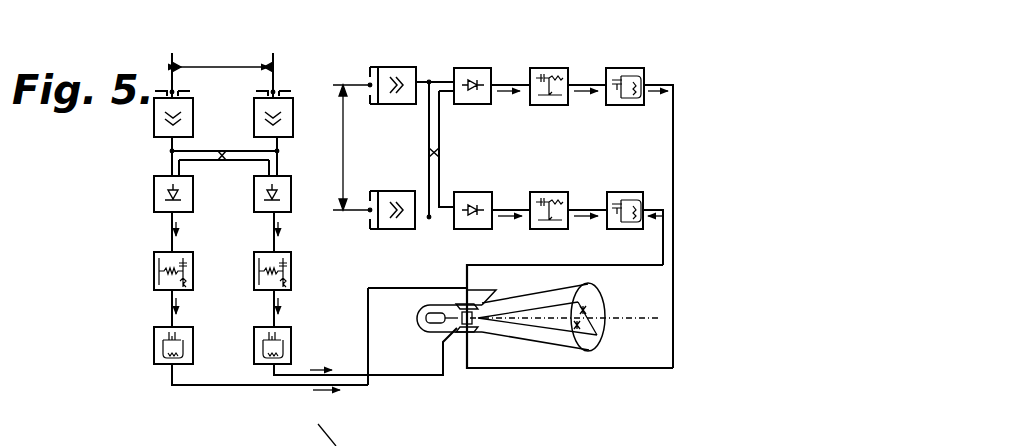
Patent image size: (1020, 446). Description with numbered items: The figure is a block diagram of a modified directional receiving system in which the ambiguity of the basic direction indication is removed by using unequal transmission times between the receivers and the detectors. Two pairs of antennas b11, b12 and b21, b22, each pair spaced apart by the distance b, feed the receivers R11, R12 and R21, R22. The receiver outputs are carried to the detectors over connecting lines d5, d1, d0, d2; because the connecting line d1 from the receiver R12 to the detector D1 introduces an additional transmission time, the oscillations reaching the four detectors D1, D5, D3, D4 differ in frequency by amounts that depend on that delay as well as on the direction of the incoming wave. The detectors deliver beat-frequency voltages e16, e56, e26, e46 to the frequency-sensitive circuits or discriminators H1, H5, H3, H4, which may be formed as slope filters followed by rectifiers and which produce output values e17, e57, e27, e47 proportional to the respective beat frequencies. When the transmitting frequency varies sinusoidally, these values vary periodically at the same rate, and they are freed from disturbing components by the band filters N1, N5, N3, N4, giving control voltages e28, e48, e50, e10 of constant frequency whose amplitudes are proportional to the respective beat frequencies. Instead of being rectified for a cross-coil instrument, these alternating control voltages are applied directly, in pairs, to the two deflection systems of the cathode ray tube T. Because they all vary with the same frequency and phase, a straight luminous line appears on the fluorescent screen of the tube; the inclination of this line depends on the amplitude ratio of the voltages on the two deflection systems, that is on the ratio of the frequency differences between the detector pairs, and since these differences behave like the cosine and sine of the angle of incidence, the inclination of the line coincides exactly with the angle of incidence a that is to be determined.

The receiver R11 is at (193, 116).
The receiver R12 is at (293, 116).
The receiver R21 is at (397, 67).
The receiver R22 is at (397, 182).
The antenna b11 is at (172, 92).
The antenna b12 is at (273, 92).
The antenna b21 is at (370, 85).
The antenna b22 is at (370, 210).
The antenna spacing b is at (271, 135).
The delay line d5 is at (213, 151).
The connecting line d1 is at (232, 155).
The delay line d0 is at (427, 150).
The delay line d2 is at (437, 172).
The detector D1 is at (193, 200).
The detector D5 is at (291, 196).
The detector D3 is at (473, 68).
The detector D4 is at (473, 192).
The frequency sensitive circuit H1 is at (193, 272).
The filter network H5 is at (291, 272).
The frequency sensitive circuit H3 is at (549, 68).
The frequency sensitive circuit H4 is at (549, 192).
The band filter N1 is at (193, 348).
The resonant circuit N5 is at (291, 348).
The band filter N3 is at (625, 68).
The band filter N4 is at (625, 192).
The detector output voltage e16 is at (186, 232).
The detector output voltage e56 is at (289, 232).
The detector output voltage e26 is at (510, 97).
The detector output voltage e46 is at (511, 222).
The frequency detector output value e17 is at (186, 308).
The filtered voltage e57 is at (289, 308).
The frequency detector output value e27 is at (587, 97).
The frequency detector output value e47 is at (587, 222).
The control voltage e28 is at (658, 226).
The control voltage e48 is at (654, 237).
The deflection voltage e50 is at (321, 365).
The deflection voltage e10 is at (270, 387).
The cathode ray tube T is at (520, 339).
The angle of incidence a is at (569, 326).